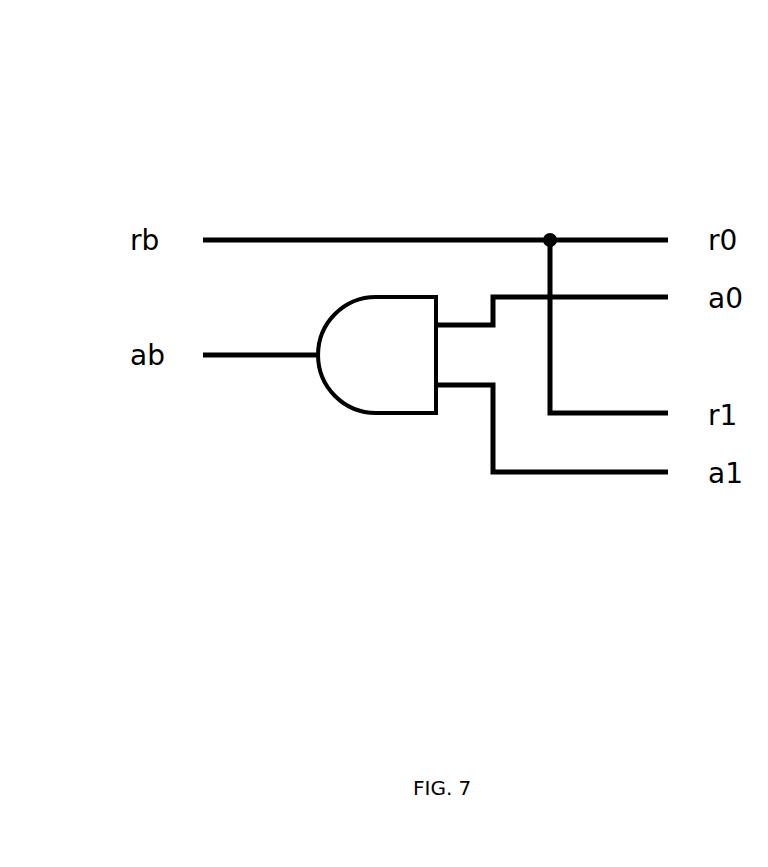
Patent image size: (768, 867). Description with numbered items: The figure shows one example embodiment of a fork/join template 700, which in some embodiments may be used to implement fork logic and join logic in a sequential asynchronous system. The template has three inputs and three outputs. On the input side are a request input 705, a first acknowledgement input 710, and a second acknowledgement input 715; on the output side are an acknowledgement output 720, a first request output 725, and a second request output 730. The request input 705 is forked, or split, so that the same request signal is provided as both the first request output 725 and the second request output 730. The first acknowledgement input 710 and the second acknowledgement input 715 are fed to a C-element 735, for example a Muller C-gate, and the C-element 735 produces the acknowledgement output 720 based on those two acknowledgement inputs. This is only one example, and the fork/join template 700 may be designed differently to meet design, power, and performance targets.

The fork/join template 700 is at (52, 61).
The request input 705 is at (273, 239).
The first acknowledgement input 710 is at (632, 299).
The second acknowledgement input 715 is at (630, 473).
The acknowledgement output 720 is at (237, 356).
The first request output 725 is at (628, 239).
The second request output 730 is at (657, 410).
The C-element 735 is at (377, 414).